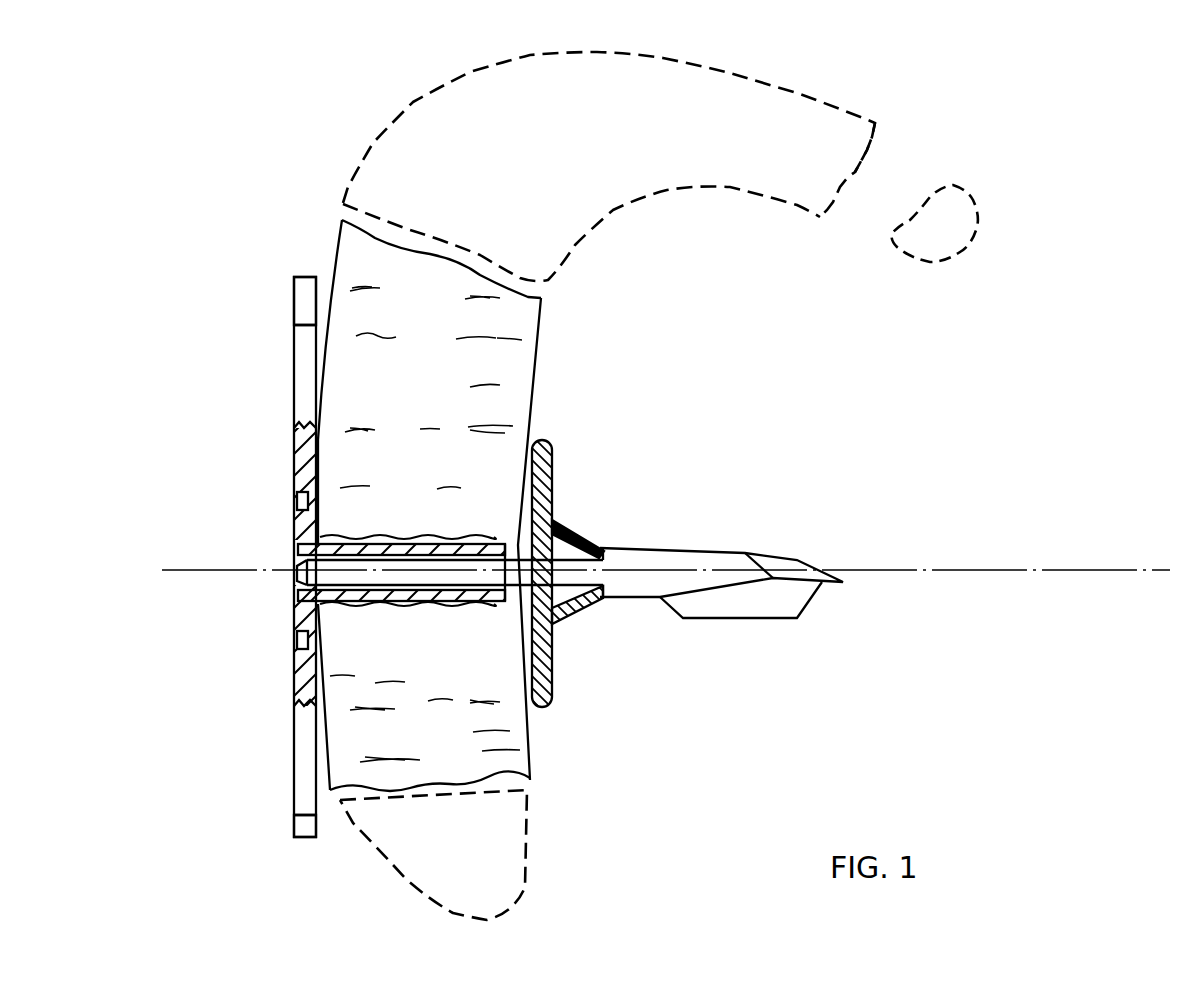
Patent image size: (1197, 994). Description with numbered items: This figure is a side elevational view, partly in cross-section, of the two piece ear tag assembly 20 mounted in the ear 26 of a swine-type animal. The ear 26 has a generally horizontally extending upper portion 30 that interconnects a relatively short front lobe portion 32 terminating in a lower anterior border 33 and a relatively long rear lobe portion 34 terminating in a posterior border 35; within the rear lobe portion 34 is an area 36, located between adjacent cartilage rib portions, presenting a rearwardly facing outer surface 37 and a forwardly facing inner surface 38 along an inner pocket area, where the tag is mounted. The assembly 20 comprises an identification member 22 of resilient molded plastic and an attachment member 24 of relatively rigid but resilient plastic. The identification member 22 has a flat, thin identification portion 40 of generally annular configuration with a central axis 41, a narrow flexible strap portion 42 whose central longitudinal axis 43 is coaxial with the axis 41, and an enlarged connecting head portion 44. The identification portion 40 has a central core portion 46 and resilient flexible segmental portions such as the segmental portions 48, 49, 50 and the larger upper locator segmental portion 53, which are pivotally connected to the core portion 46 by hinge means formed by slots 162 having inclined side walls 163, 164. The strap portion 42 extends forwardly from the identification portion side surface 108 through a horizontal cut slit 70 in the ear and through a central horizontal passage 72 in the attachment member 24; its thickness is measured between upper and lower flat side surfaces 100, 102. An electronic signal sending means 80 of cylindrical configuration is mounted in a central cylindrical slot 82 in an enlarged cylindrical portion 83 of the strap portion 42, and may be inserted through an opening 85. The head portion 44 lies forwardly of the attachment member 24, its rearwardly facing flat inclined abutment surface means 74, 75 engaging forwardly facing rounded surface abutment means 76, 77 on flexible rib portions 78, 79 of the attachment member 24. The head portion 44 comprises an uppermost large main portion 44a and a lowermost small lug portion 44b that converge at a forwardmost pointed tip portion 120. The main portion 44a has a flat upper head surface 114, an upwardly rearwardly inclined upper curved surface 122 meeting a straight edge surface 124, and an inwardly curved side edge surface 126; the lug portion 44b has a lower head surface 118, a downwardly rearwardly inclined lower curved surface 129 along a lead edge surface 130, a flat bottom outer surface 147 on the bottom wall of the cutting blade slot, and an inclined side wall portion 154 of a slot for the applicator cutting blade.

The ear tag assembly 20 is at (682, 480).
The identification member 22 is at (794, 549).
The attachment member 24 is at (557, 705).
The ear 26 is at (487, 270).
The upper portion 30 is at (667, 192).
The front lobe portion 32 is at (855, 172).
The lower anterior border 33 is at (977, 227).
The rear lobe portion 34 is at (546, 306).
The posterior border 35 is at (497, 917).
The area 36 is at (517, 420).
The outer surface 37 is at (339, 238).
The inner surface 38 is at (524, 320).
The identification portion 40 is at (320, 380).
The central axis 41 is at (260, 573).
The strap portion 42 is at (451, 543).
The central longitudinal axis 43 is at (1100, 568).
The head portion 44 is at (855, 594).
The main portion 44a is at (750, 555).
The lug portion 44b is at (803, 608).
The core portion 46 is at (294, 534).
The segmental portion 48 is at (305, 348).
The segmental portion 49 is at (375, 745).
The segmental portion 50 is at (295, 838).
The segmental portion 53 is at (297, 308).
The cut slit 70 is at (408, 600).
The central horizontal passage 72 is at (545, 597).
The abutment surface means 74 is at (605, 546).
The abutment surface means 75 is at (603, 598).
The surface abutment means 76 is at (601, 546).
The surface abutment means 77 is at (597, 600).
The flexible rib portion 78 is at (555, 505).
The flexible rib portion 79 is at (573, 612).
The electronic signal sending means 80 is at (392, 573).
The central cylindrical slot 82 is at (394, 560).
The enlarged cylindrical portion 83 is at (485, 545).
The opening 85 is at (292, 587).
The upper flat side surface 100 is at (458, 484).
The lower flat side surface 102 is at (512, 607).
The identification portion side surface 108 is at (345, 748).
The flat upper head surface 114 is at (625, 551).
The lower head surface 118 is at (660, 603).
The pointed tip portion 120 is at (846, 580).
The upper curved surface 122 is at (797, 562).
The straight edge surface 124 is at (800, 580).
The inwardly curved side edge surface 126 is at (803, 582).
The lower curved surface 129 is at (802, 600).
The lead edge surface 130 is at (845, 592).
The flat bottom outer surface 147 is at (750, 620).
The inclined side wall portion 154 is at (695, 612).
The slots 162 is at (298, 646).
The inclined side wall 163 is at (297, 492).
The inclined side wall 164 is at (297, 509).